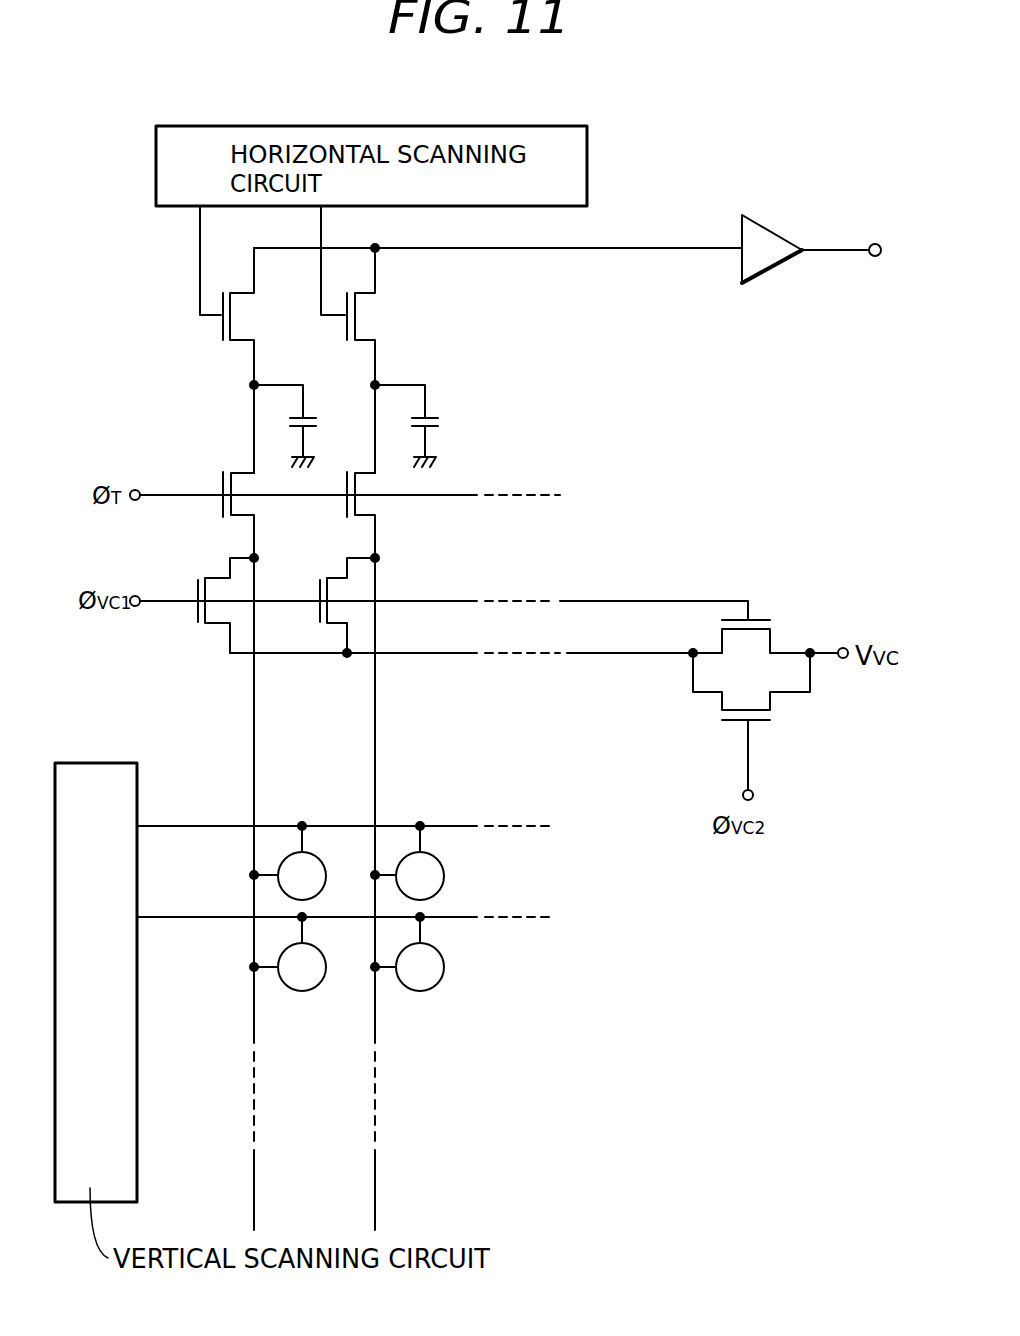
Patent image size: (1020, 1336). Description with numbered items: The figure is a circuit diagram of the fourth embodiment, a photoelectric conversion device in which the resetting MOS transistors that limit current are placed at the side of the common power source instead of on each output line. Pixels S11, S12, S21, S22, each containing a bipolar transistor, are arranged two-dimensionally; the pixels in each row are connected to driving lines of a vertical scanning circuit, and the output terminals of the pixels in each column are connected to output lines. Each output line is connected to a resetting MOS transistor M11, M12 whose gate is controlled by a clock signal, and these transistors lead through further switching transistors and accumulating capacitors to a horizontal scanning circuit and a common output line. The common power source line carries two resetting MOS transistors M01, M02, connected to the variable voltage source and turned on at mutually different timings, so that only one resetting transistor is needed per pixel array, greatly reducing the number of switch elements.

The resetting MOS transistor M11 is at (218, 598).
The resetting MOS transistor M12 is at (338, 600).
The resetting MOS transistor M01 is at (751, 726).
The resetting MOS transistor M02 is at (768, 623).
The pixel S11 is at (288, 861).
The pixel S12 is at (407, 861).
The pixel S21 is at (288, 952).
The pixel S22 is at (407, 952).